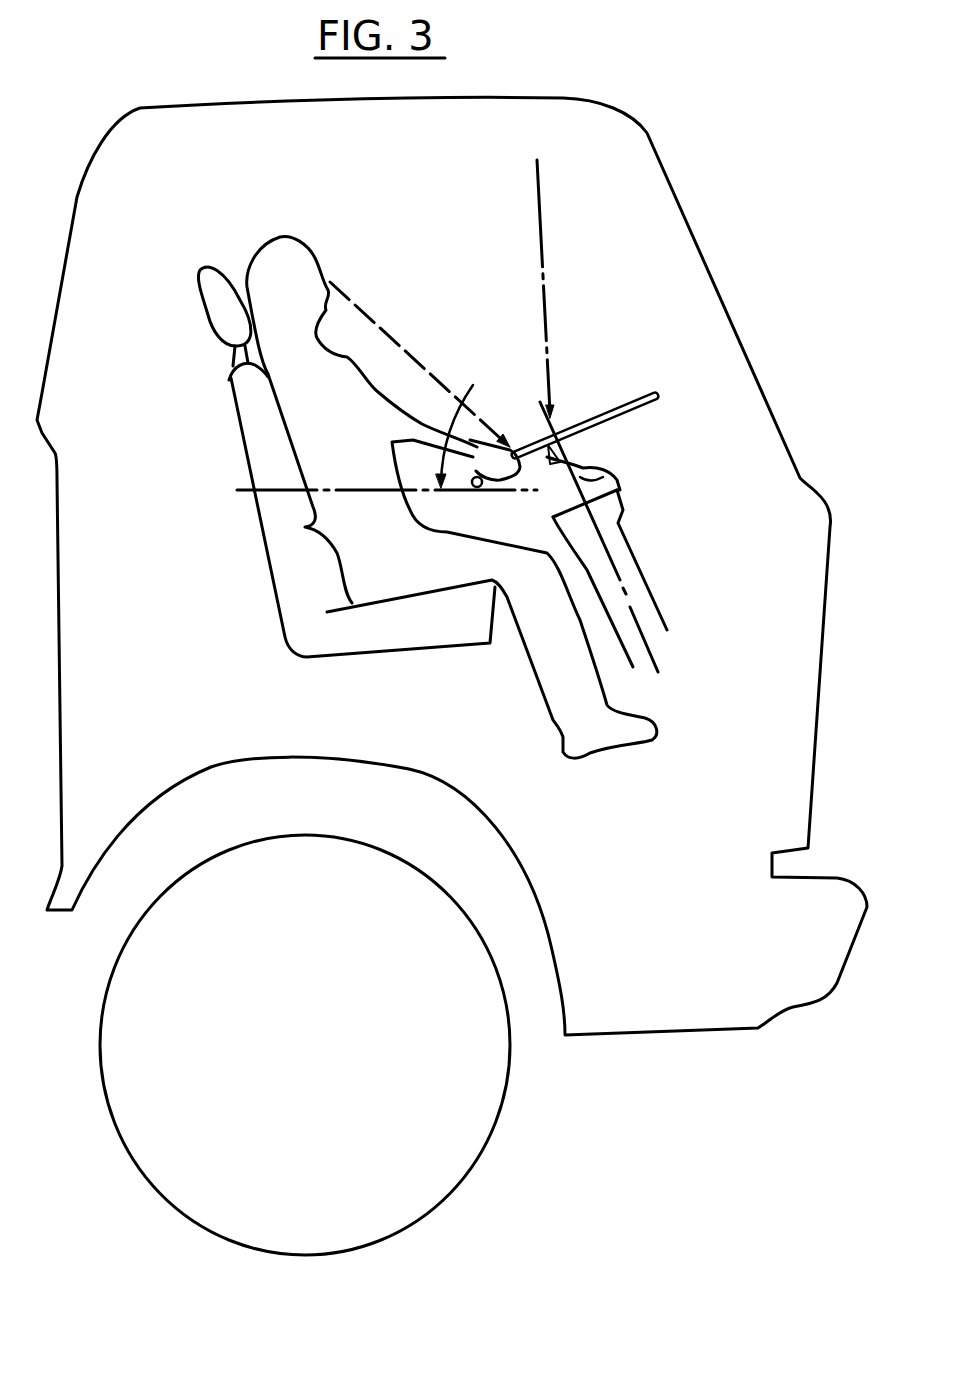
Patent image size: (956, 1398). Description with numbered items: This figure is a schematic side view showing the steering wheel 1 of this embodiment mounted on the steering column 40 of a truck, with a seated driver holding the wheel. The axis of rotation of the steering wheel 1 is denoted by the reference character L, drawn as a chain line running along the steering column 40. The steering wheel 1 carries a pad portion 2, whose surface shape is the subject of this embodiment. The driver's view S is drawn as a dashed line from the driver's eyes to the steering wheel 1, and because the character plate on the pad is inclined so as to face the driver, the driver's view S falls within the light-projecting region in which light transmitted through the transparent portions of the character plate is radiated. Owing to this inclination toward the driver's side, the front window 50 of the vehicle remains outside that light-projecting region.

The front window 50 is at (707, 270).
The steering wheel 1 is at (604, 399).
The pad portion 2 is at (617, 480).
The steering column 40 is at (648, 616).
The axis of rotation L is at (642, 632).
The driver's view S is at (410, 348).